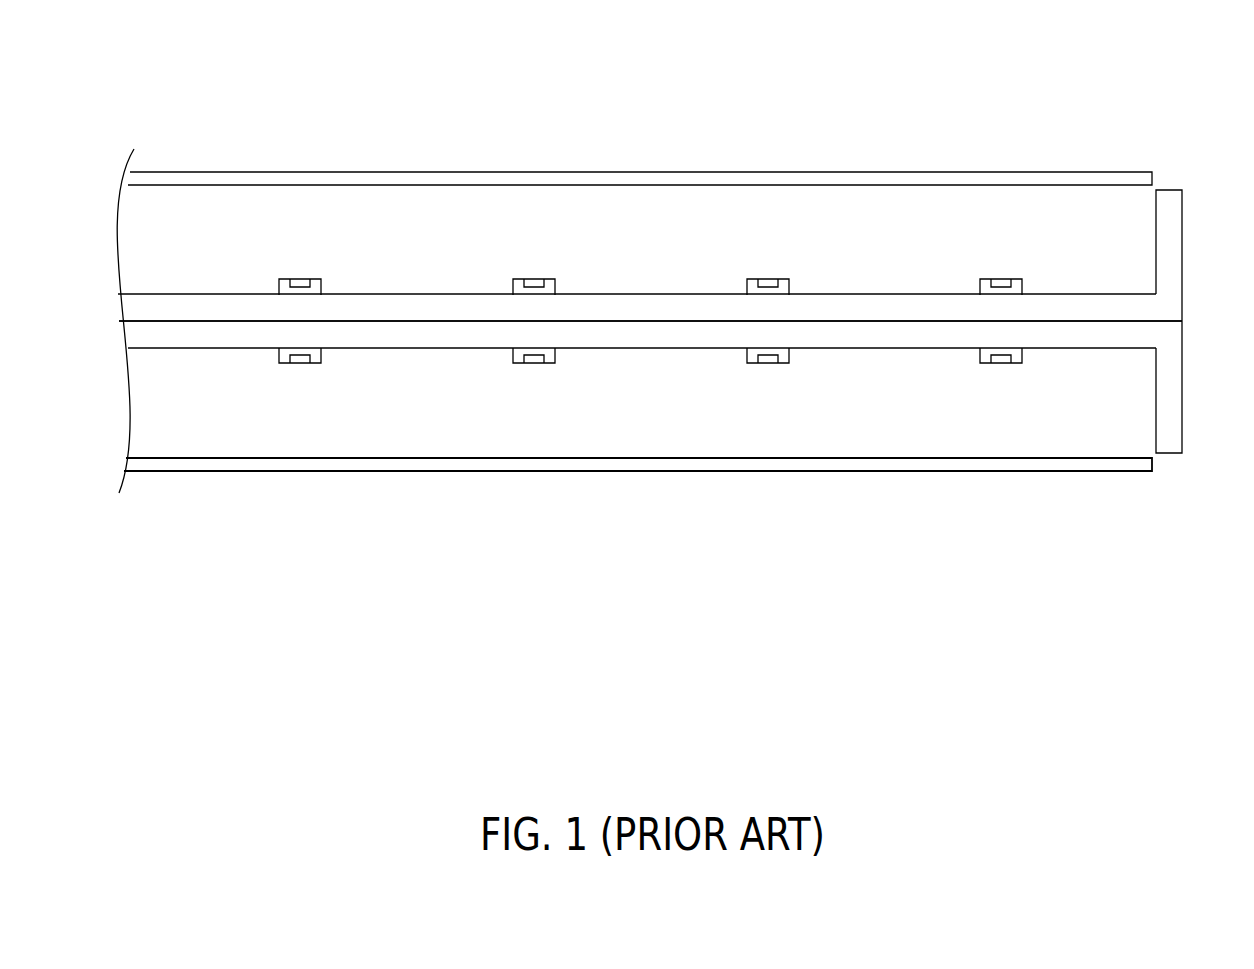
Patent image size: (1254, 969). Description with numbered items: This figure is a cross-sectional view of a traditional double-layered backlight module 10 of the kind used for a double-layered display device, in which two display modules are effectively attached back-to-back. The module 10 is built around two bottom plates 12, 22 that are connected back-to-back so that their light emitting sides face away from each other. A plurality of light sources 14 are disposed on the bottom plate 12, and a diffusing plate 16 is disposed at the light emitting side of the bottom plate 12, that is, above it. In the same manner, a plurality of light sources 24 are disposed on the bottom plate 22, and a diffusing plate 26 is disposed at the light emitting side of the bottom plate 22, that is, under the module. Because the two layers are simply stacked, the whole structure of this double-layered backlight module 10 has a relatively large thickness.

The double-layered backlight module 10 is at (135, 75).
The bottom plate 12 is at (1142, 308).
The light sources 14 is at (1015, 282).
The diffusing plate 16 is at (1000, 180).
The bottom plate 22 is at (1142, 335).
The light sources 24 is at (1015, 362).
The diffusing plate 26 is at (1001, 463).